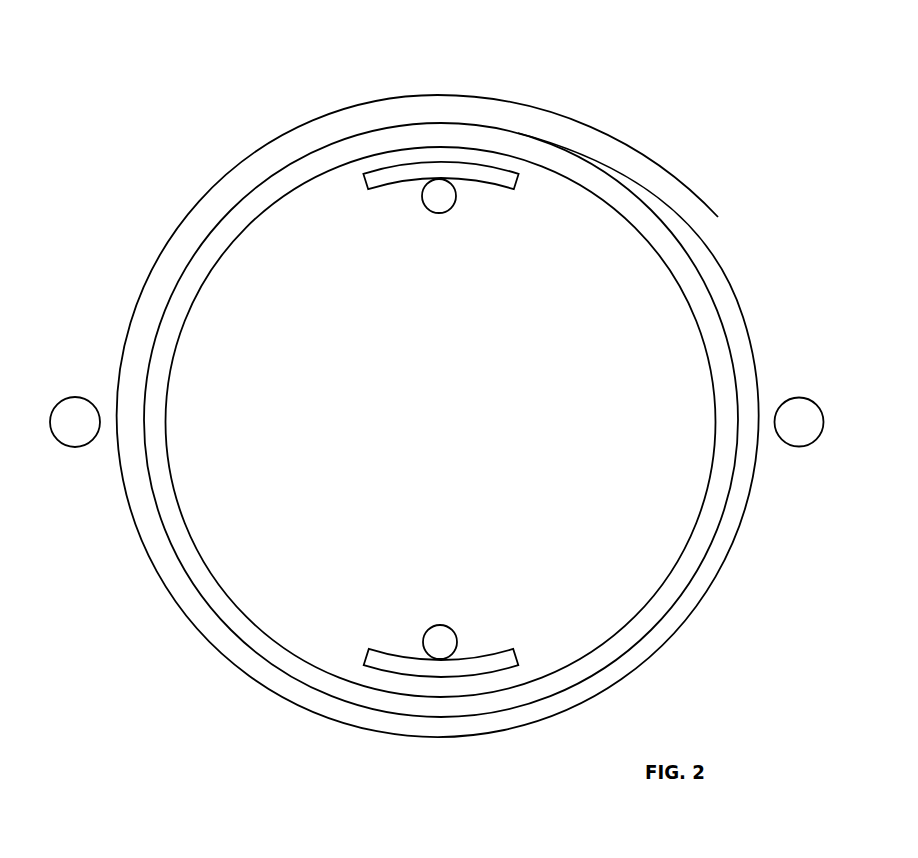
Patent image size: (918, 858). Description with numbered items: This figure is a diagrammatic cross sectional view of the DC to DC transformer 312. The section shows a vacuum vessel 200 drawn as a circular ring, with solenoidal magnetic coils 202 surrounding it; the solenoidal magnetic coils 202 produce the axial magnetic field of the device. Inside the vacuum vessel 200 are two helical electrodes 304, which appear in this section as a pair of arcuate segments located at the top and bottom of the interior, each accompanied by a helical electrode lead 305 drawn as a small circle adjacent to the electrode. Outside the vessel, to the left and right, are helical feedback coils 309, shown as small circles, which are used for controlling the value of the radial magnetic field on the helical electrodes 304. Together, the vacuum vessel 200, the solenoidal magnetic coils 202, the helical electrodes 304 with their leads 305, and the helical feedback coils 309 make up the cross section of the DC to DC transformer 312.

The vacuum vessel 200 is at (247, 627).
The solenoidal magnetic coils 202 is at (155, 571).
The helical electrodes 304 is at (477, 187).
The helical electrode leads 305 is at (432, 211).
The helical feedback coils 309 is at (82, 398).
The DC to DC transformer 312 is at (426, 385).